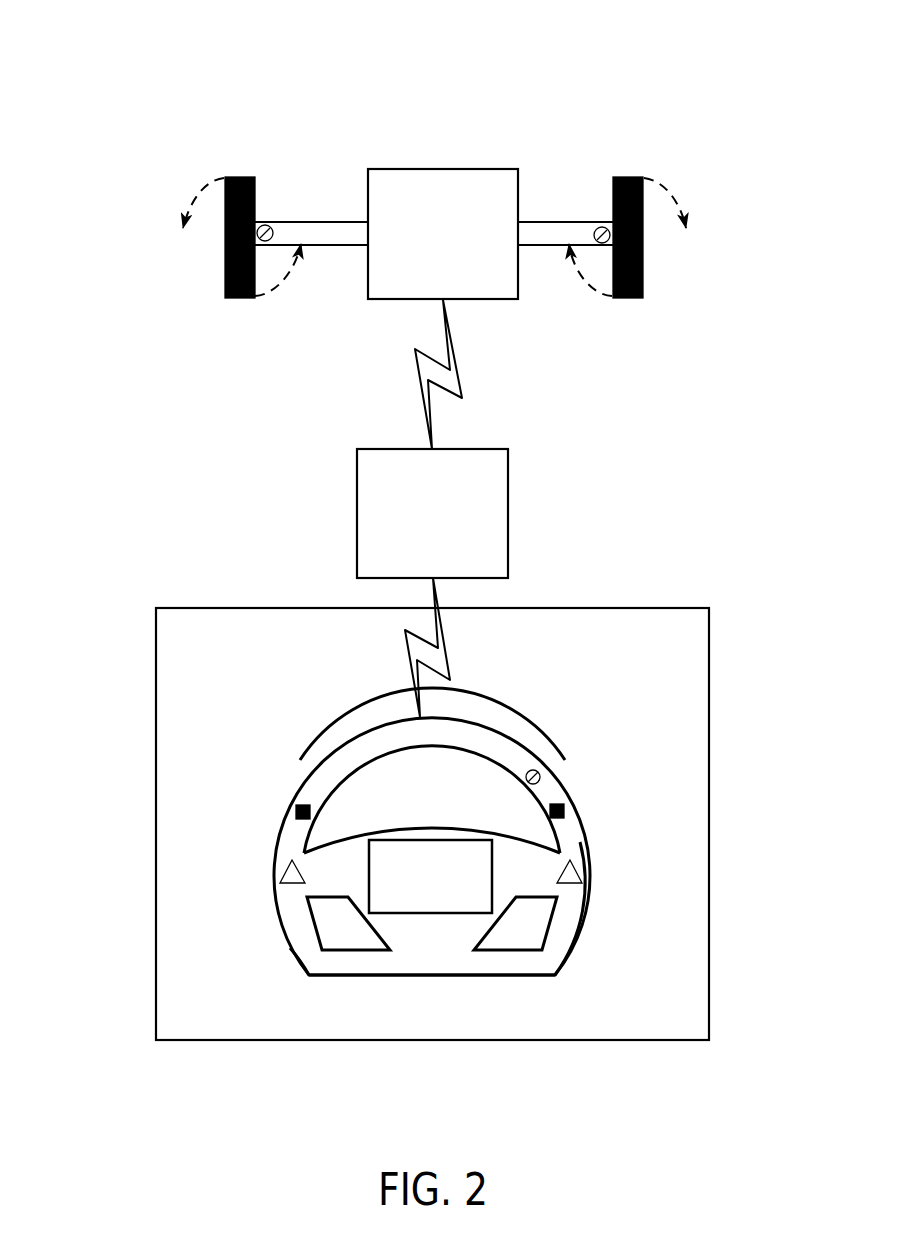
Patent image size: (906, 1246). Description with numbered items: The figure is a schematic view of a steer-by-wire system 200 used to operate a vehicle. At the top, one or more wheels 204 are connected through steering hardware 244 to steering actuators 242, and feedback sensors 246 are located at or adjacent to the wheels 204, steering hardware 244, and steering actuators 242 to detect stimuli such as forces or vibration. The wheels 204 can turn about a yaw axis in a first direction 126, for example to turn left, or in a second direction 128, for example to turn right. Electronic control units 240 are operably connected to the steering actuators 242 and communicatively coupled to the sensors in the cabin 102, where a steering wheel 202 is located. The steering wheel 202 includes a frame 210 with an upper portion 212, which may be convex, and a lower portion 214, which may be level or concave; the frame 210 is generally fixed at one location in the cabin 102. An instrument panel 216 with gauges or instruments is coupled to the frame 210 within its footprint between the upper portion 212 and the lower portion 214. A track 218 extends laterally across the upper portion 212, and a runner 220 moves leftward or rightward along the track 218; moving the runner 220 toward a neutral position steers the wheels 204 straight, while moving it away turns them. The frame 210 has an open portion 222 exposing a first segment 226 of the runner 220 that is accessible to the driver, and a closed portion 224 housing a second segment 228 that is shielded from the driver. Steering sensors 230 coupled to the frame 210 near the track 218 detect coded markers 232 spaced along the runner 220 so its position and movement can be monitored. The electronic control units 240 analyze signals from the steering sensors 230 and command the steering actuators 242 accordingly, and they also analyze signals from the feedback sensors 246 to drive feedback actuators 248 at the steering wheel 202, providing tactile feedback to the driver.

The steer-by-wire system 200 is at (140, 58).
The cabin 102 is at (432, 824).
The first direction 126 is at (179, 193).
The second direction 128 is at (678, 182).
The wheels 204 is at (225, 275).
The steering hardware 244 is at (298, 221).
The feedback sensors 246 is at (265, 224).
The steering actuators 242 is at (443, 234).
The electronic control units (ECUs) 240 is at (432, 513).
The steering wheel 202 is at (311, 704).
The upper portion 212 is at (533, 732).
The open portion 222 is at (456, 720).
The runner 220 is at (323, 763).
The track 218 is at (381, 773).
The closed portion 224 is at (586, 838).
The first segment 226 is at (547, 768).
The second segment 228 is at (580, 812).
The steering sensors 230 is at (297, 803).
The markers 232 is at (527, 775).
The instrument panel 216 is at (453, 915).
The feedback actuators 248 is at (280, 884).
The frame 210 is at (290, 948).
The lower portion 214 is at (546, 991).